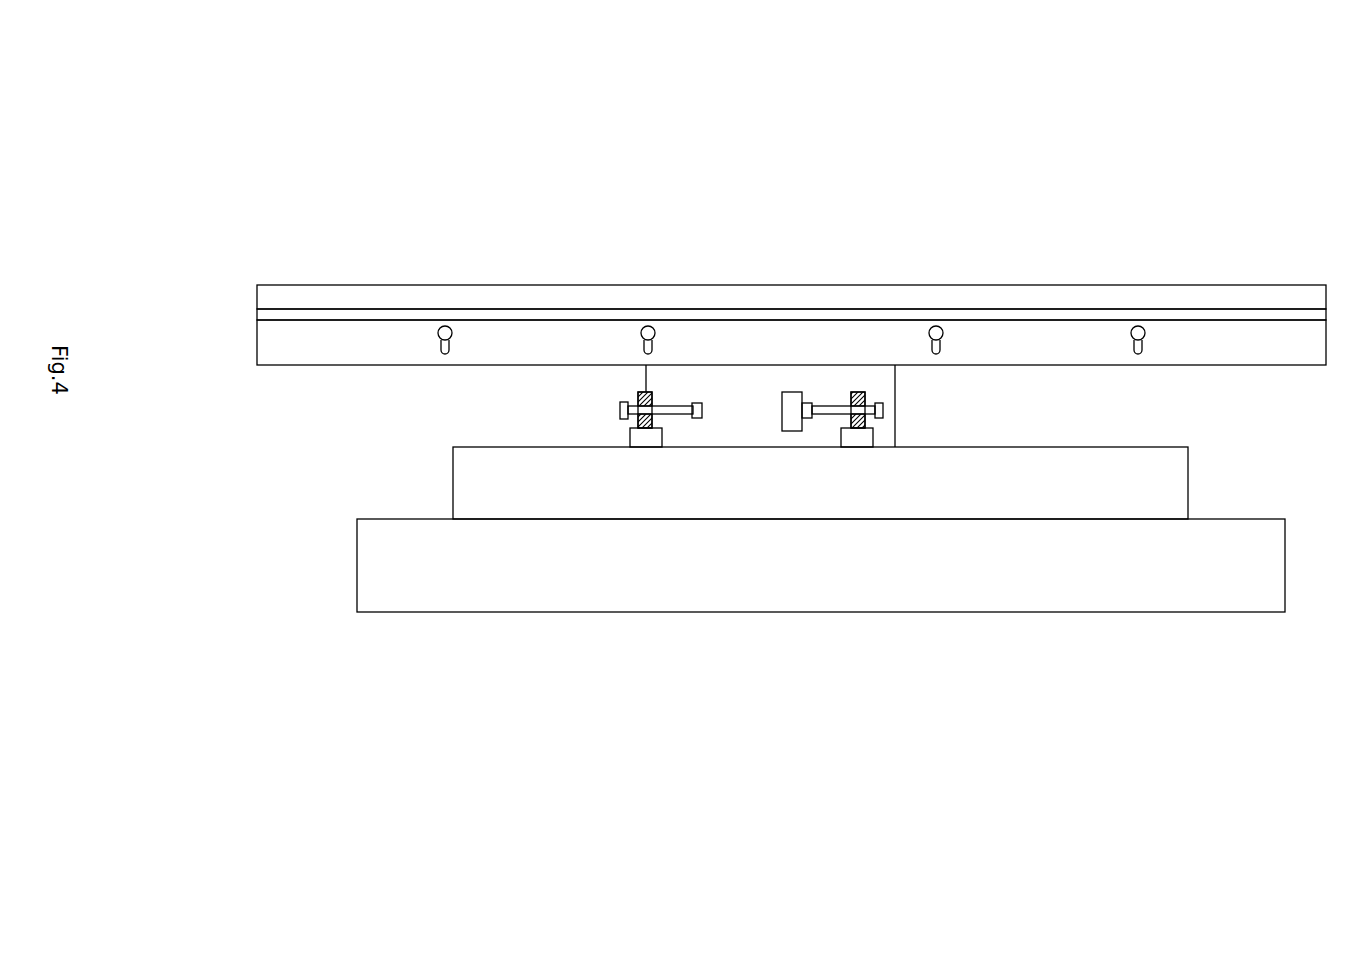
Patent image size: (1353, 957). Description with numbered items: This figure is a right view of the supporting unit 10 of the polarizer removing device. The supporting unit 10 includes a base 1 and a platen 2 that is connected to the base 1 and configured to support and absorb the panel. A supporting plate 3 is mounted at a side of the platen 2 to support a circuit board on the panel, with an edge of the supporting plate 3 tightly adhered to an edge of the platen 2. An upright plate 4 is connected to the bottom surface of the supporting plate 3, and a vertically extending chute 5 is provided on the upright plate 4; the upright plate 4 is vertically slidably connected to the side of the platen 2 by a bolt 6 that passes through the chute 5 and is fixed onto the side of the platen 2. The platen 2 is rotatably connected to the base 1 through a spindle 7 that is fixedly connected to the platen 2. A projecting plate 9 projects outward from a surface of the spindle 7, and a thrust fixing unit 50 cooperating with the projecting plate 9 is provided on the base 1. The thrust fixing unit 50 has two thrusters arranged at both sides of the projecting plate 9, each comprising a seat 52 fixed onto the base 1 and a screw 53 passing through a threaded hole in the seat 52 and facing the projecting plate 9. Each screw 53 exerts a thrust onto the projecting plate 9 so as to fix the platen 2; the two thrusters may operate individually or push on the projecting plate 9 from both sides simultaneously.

The supporting unit 10 is at (200, 167).
The base 1 is at (503, 490).
The platen 2 is at (423, 297).
The supporting plate 3 is at (1230, 313).
The upright plate 4 is at (1237, 352).
The chute 5 is at (1142, 343).
The bolt 6 is at (937, 330).
The spindle 7 is at (747, 385).
The projecting plate 9 is at (792, 408).
The thrust fixing unit 50 is at (759, 484).
The seat 52 is at (645, 433).
The screw 53 is at (620, 409).